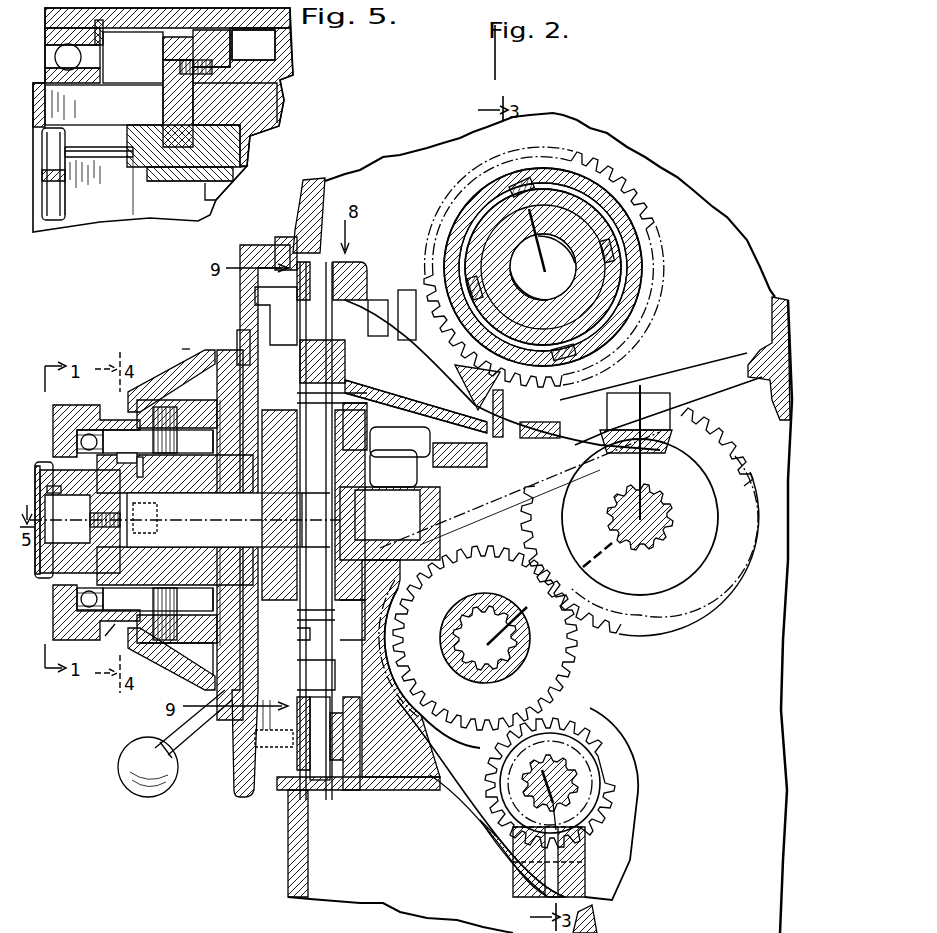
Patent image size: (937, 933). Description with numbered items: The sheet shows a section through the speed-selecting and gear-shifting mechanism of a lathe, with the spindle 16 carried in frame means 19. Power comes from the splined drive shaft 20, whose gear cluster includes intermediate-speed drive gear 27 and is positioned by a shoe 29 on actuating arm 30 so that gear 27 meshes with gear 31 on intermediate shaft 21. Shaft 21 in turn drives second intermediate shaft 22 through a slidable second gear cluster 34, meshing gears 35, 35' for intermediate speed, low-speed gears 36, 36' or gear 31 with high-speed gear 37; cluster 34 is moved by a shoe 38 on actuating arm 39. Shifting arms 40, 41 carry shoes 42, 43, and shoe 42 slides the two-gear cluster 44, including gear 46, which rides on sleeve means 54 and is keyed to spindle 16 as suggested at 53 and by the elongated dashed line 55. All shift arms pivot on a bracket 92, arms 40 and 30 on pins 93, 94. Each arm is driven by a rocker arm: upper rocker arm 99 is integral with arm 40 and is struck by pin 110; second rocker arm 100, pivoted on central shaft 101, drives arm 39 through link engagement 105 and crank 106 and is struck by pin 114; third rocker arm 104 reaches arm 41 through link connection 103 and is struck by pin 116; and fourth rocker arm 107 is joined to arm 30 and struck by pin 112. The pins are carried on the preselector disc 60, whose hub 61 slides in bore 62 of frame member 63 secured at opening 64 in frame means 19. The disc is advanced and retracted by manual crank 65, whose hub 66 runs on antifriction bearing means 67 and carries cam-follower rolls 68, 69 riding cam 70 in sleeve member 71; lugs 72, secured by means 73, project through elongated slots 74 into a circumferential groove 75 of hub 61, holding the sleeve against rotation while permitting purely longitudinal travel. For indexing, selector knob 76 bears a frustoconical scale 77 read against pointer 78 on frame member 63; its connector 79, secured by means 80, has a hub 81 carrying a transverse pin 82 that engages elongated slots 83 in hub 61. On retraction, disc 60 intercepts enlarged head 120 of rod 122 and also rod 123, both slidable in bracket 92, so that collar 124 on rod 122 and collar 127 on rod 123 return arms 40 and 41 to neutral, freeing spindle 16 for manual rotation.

In FIG. 2, the lathe spindle 16 is at (580, 280).
In FIG. 2, the frame means 19 is at (300, 222).
In FIG. 2, the drive shaft 20 is at (585, 765).
In FIG. 2, the intermediate shaft 21 is at (450, 655).
In FIG. 2, the second intermediate shaft 22 is at (666, 535).
In FIG. 2, the intermediate-speed drive gear 27 is at (575, 785).
In FIG. 2, the shoe 29 is at (585, 850).
In FIG. 2, the actuating arm 30 is at (495, 870).
In FIG. 2, the gear 31 is at (475, 735).
In FIG. 2, the second gear cluster 34 is at (743, 603).
In FIG. 2, the gear 35 is at (640, 534).
In FIG. 2, the gear 35' is at (600, 559).
In FIG. 2, the low-speed gear 36 is at (504, 638).
In FIG. 2, the low-speed gear 36' is at (520, 490).
In FIG. 2, the high-speed gear 37 is at (508, 490).
In FIG. 2, the shoe 38 is at (706, 398).
In FIG. 2, the actuating arm 39 is at (700, 380).
In FIG. 2, the shifting arm 40 is at (470, 395).
In FIG. 2, the shifting arm 41 is at (645, 385).
In FIG. 2, the shoe 42 is at (540, 427).
In FIG. 2, the shoe 43 is at (660, 455).
In FIG. 2, the gear-shift member 44 is at (640, 303).
In FIG. 2, the gear 46 is at (650, 215).
In FIG. 2, the keyed relation 53 is at (528, 185).
In FIG. 2, the sleeve means 54 is at (565, 292).
In FIG. 2, the elongated dashed line 55 is at (480, 278).
In FIG. 2, the preselector plate 60 is at (230, 445).
In FIG. 5, the hub 61 is at (234, 183).
In FIG. 2, the hub 61 is at (185, 520).
In FIG. 5, the bore 62 is at (250, 137).
In FIG. 2, the bore 62 is at (200, 470).
In FIG. 5, the frame member 63 is at (275, 105).
In FIG. 2, the frame member 63 is at (242, 300).
In FIG. 2, the opening 64 is at (288, 252).
In FIG. 2, the actuating arm 65 is at (138, 795).
In FIG. 5, the hub 66 is at (167, 18).
In FIG. 2, the hub 66 is at (171, 659).
In FIG. 5, the antifriction bearing means 67 is at (70, 74).
In FIG. 2, the antifriction bearing means 67 is at (113, 640).
In FIG. 2, the cam-follower roll 68 is at (177, 426).
In FIG. 2, the cam-follower roll 69 is at (177, 615).
In FIG. 5, the cam 70 is at (266, 63).
In FIG. 2, the cam 70 is at (158, 520).
In FIG. 5, the sleeve member 71 is at (286, 79).
In FIG. 2, the sleeve member 71 is at (225, 520).
In FIG. 5, the key member 72 is at (163, 46).
In FIG. 2, the key member 72 is at (150, 540).
In FIG. 5, the securing means 73 is at (205, 62).
In FIG. 5, the elongated slot 74 is at (55, 103).
In FIG. 2, the elongated slot 74 is at (80, 521).
In FIG. 5, the circumferential groove 75 is at (175, 181).
In FIG. 2, the circumferential groove 75 is at (148, 469).
In FIG. 2, the selector knob 76 is at (80, 410).
In FIG. 2, the frustoconical scale 77 is at (188, 339).
In FIG. 2, the pointer 78 is at (190, 345).
In FIG. 2, the connector 79 is at (42, 462).
In FIG. 2, the securing means 80 is at (60, 432).
In FIG. 5, the hub 81 is at (78, 158).
In FIG. 2, the hub 81 is at (47, 490).
In FIG. 5, the transverse pin 82 is at (55, 216).
In FIG. 2, the transverse pin 82 is at (100, 528).
In FIG. 5, the elongated slot 83 is at (99, 186).
In FIG. 2, the elongated slot 83 is at (123, 467).
In FIG. 2, the bracket 92 is at (260, 735).
In FIG. 2, the pin 93 is at (340, 272).
In FIG. 2, the pin 94 is at (325, 792).
In FIG. 2, the upper rocker arm 99 is at (345, 395).
In FIG. 2, the second rocker arm 100 is at (313, 531).
In FIG. 2, the central shaft 101 is at (290, 500).
In FIG. 2, the link connection 103 is at (401, 668).
In FIG. 2, the third rocker arm 104 is at (316, 628).
In FIG. 2, the link engagement 105 is at (412, 433).
In FIG. 2, the crank 106 is at (410, 490).
In FIG. 2, the fourth rocker arm 107 is at (364, 625).
In FIG. 2, the pin 110 is at (305, 372).
In FIG. 2, the pin 112 is at (316, 676).
In FIG. 2, the pin 114 is at (228, 450).
In FIG. 2, the pin 116 is at (308, 633).
In FIG. 2, the enlarged head 120 is at (240, 338).
In FIG. 2, the rod 122 is at (258, 320).
In FIG. 2, the rod 123 is at (415, 340).
In FIG. 2, the collar 124 is at (385, 325).
In FIG. 2, the collar 127 is at (435, 368).